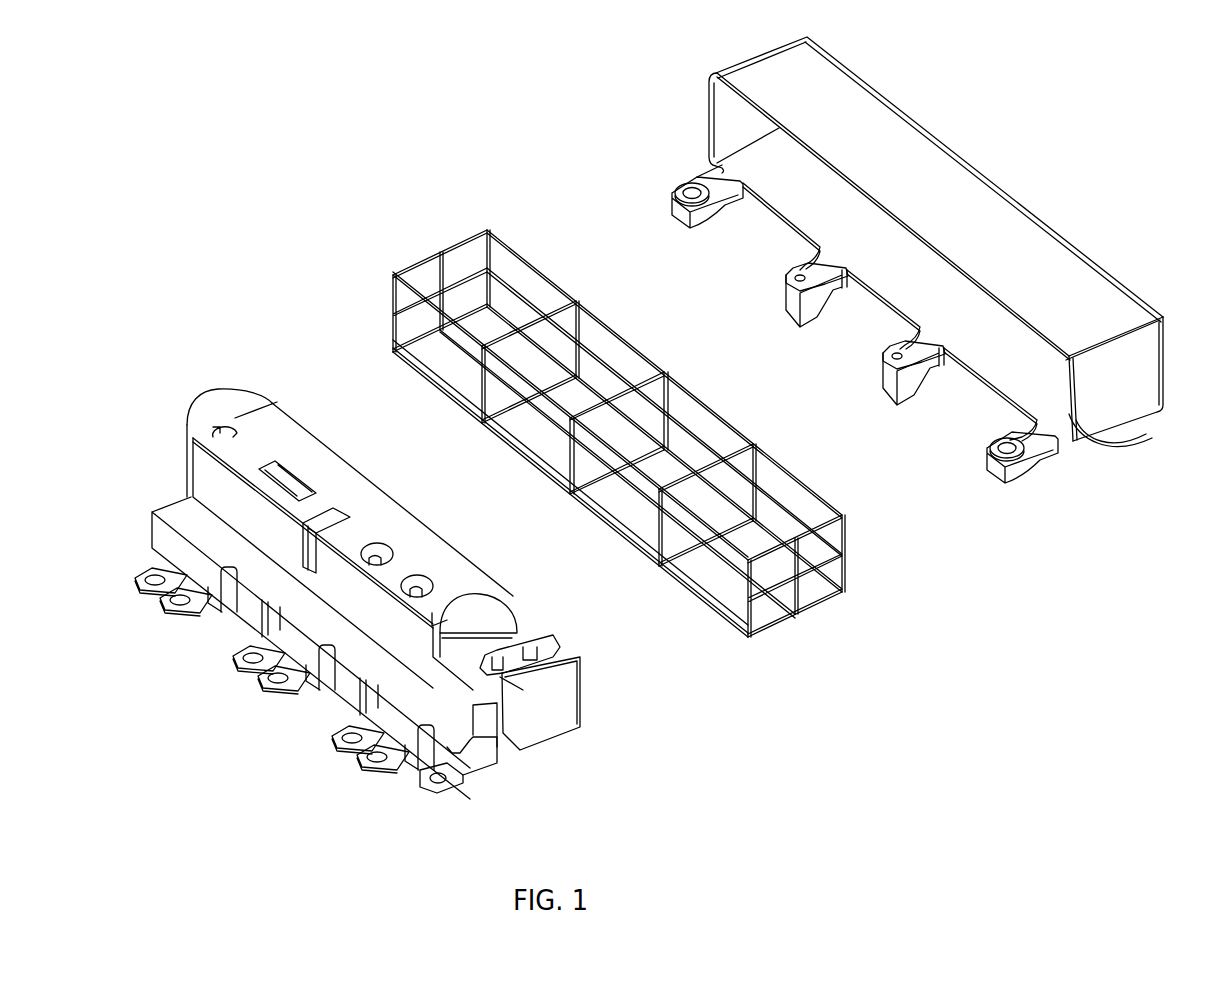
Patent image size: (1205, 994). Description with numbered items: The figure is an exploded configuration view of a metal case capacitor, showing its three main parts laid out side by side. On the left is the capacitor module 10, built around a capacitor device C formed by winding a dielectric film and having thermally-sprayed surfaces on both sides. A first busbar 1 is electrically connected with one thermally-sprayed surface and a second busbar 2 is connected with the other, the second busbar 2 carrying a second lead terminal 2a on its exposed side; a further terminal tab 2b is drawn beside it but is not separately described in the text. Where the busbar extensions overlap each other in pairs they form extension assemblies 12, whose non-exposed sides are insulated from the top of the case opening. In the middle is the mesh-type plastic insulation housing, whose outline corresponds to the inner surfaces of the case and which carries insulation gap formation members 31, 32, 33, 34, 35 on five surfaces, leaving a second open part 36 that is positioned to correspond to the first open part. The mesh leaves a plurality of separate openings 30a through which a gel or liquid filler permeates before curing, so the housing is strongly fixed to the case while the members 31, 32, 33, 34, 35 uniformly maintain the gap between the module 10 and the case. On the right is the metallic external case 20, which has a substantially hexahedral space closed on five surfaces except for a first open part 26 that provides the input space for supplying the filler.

The capacitor module 10 is at (565, 791).
The first busbar 1 is at (207, 478).
The capacitor device C is at (223, 393).
The extension assembly 12 is at (203, 567).
The second busbar 2 is at (470, 743).
The second lead terminal 2a is at (350, 747).
The second terminal tab 2b is at (392, 760).
The metallic external case 20 is at (767, 77).
The first open part 26 is at (875, 267).
The separate openings 30a is at (473, 377).
The insulation gap formation member 31 is at (700, 432).
The insulation gap formation member 32 is at (437, 290).
The insulation gap formation member 33 is at (800, 578).
The insulation gap formation member 34 is at (593, 373).
The insulation gap formation member 35 is at (657, 503).
The second open part 36 is at (562, 438).